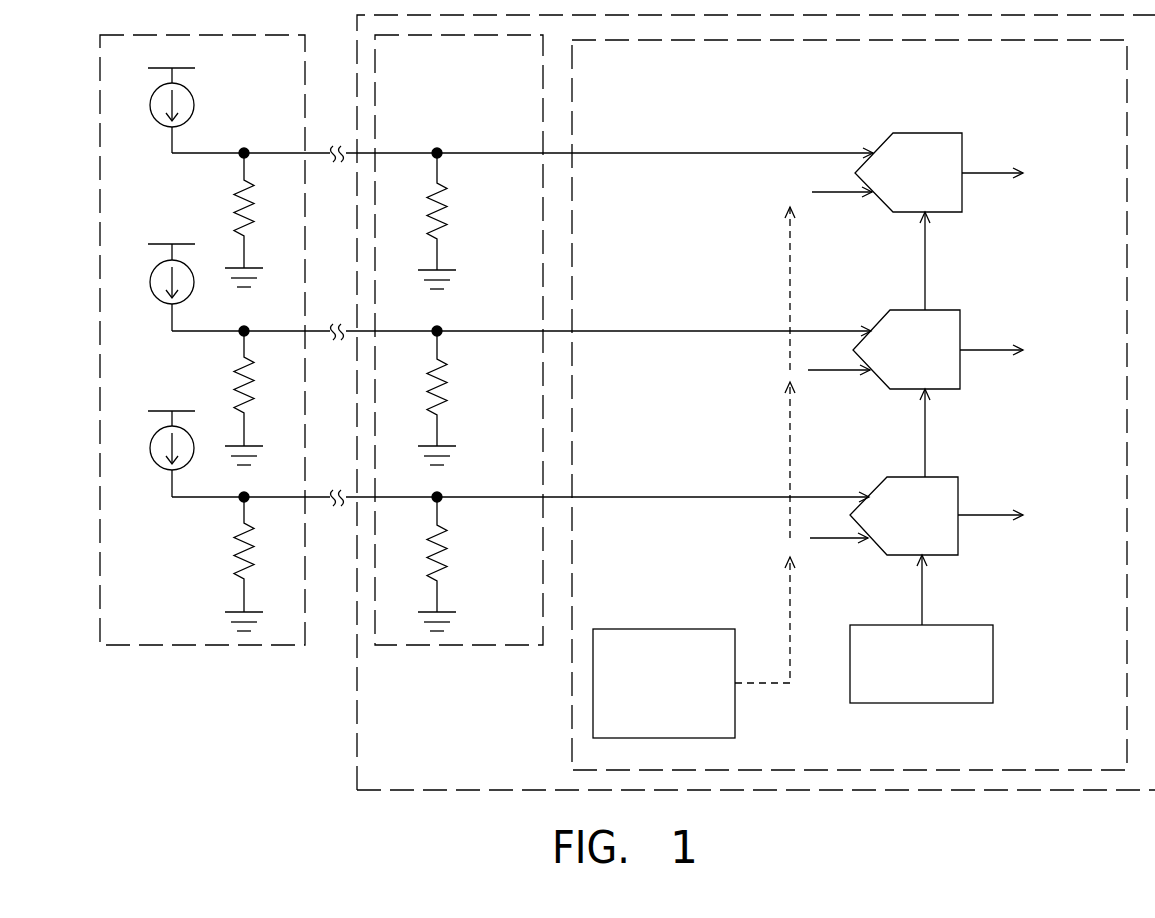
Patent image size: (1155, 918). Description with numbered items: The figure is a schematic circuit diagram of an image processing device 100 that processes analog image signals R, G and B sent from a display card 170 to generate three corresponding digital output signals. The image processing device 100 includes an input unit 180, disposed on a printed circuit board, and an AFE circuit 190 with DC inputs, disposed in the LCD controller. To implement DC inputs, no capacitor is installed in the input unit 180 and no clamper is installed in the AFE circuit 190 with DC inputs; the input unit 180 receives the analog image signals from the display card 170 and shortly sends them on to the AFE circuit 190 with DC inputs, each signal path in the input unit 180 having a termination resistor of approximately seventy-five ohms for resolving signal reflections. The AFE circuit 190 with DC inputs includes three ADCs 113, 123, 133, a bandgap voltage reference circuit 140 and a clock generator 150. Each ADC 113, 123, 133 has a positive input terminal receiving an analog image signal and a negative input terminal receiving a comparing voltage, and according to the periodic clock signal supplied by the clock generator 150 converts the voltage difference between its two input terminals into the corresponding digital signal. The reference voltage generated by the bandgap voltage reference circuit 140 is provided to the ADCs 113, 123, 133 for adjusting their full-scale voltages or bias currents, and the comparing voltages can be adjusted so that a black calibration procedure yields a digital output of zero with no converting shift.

The image processing device 100 is at (352, 734).
The ADC 113 is at (939, 183).
The ADC 123 is at (937, 360).
The ADC 133 is at (935, 525).
The bandgap voltage reference circuit 140 is at (680, 629).
The clock generator 150 is at (850, 703).
The display card 170 is at (240, 650).
The input unit 180 is at (490, 650).
The AFE circuit with DC inputs 190 is at (572, 753).